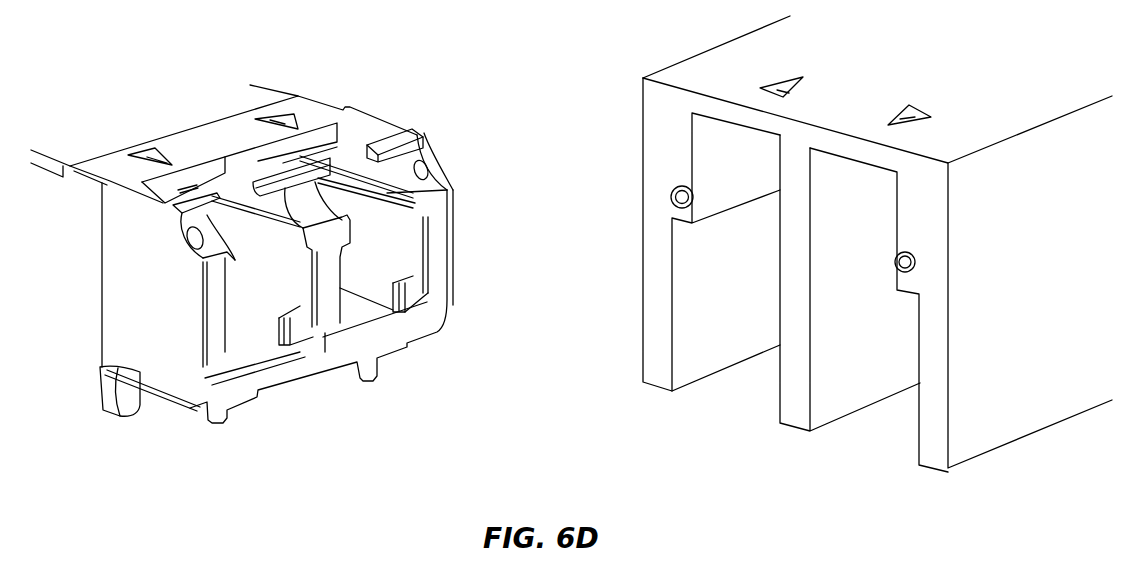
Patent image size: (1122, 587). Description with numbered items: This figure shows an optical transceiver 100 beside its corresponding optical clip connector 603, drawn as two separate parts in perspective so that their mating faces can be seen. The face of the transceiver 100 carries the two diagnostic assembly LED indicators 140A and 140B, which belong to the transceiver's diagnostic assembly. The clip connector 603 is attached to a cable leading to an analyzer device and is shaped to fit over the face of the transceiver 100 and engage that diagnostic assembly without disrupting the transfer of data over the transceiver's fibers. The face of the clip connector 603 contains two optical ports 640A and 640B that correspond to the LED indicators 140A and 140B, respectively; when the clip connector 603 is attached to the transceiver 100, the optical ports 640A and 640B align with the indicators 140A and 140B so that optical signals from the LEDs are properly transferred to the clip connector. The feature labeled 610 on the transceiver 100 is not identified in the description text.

The transceiver 100 is at (288, 290).
The diagnostic assembly LED indicator 140A is at (197, 238).
The diagnostic assembly LED indicator 140B is at (424, 171).
The clip 610 is at (247, 307).
The clip connector 603 is at (877, 256).
The optical port 640A is at (900, 270).
The optical port 640B is at (684, 205).